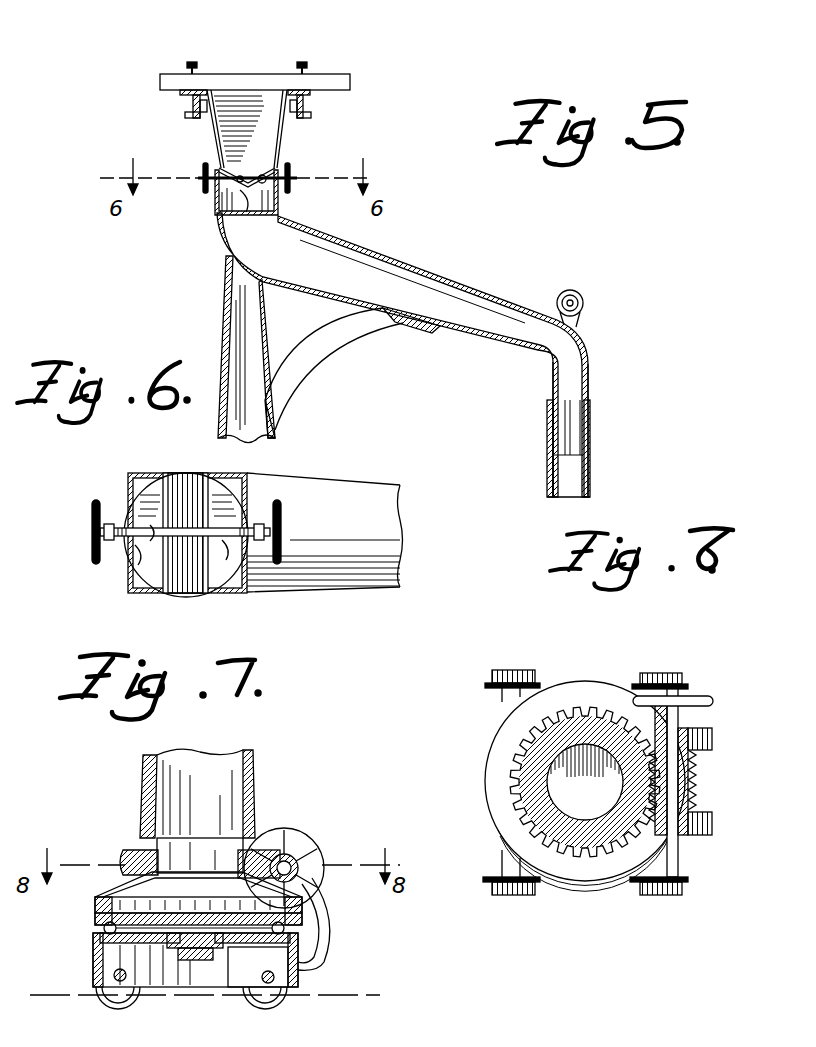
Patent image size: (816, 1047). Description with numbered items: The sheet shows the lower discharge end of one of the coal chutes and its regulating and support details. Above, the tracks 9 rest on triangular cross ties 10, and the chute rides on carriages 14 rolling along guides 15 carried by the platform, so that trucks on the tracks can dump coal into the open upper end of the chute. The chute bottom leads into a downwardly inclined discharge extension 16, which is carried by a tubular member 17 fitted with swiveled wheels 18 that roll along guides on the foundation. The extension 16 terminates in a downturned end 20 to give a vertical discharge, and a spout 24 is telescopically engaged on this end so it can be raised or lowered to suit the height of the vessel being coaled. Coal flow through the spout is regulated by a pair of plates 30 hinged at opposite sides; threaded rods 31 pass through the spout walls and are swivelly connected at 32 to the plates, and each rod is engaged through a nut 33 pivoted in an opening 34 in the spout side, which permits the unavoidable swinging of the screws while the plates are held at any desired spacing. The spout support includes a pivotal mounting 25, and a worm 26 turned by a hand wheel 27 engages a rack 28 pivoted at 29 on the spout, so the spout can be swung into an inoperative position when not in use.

In FIG. 5, the tracks 9 is at (302, 62).
In FIG. 5, the cross ties 10 is at (228, 74).
In FIG. 5, the carriages 14 is at (310, 100).
In FIG. 5, the guides 15 is at (306, 116).
In FIG. 5, the discharge extensions 16 is at (427, 268).
In FIG. 6, the discharge extensions 16 is at (352, 590).
In FIG. 5, the tubular members 17 is at (228, 322).
In FIG. 7, the tubular members 17 is at (256, 778).
In FIG. 7, the swiveled wheels 18 is at (108, 1000).
In FIG. 8, the swiveled wheels 18 is at (655, 673).
In FIG. 5, the downturned ends 20 is at (592, 374).
In FIG. 5, the spouts 24 is at (592, 468).
In FIG. 7, the pivotal mounting 25 is at (95, 910).
In FIG. 8, the pivotal mounting 25 is at (590, 882).
In FIG. 7, the worm 26 is at (304, 895).
In FIG. 8, the worm 26 is at (692, 785).
In FIG. 7, the hand wheel 27 is at (306, 840).
In FIG. 8, the hand wheel 27 is at (712, 699).
In FIG. 7, the rack 28 is at (124, 856).
In FIG. 8, the rack 28 is at (520, 768).
In FIG. 7, the pivot 29 is at (200, 961).
In FIG. 5, the plates 30 is at (249, 179).
In FIG. 6, the plates 30 is at (186, 473).
In FIG. 5, the threaded rods 31 is at (279, 194).
In FIG. 6, the threaded rods 31 is at (148, 512).
In FIG. 5, the swivel connections 32 is at (246, 208).
In FIG. 6, the swivel connections 32 is at (158, 552).
In FIG. 5, the nuts 33 is at (291, 179).
In FIG. 6, the nuts 33 is at (252, 520).
In FIG. 5, the openings 34 is at (270, 175).
In FIG. 6, the openings 34 is at (232, 548).